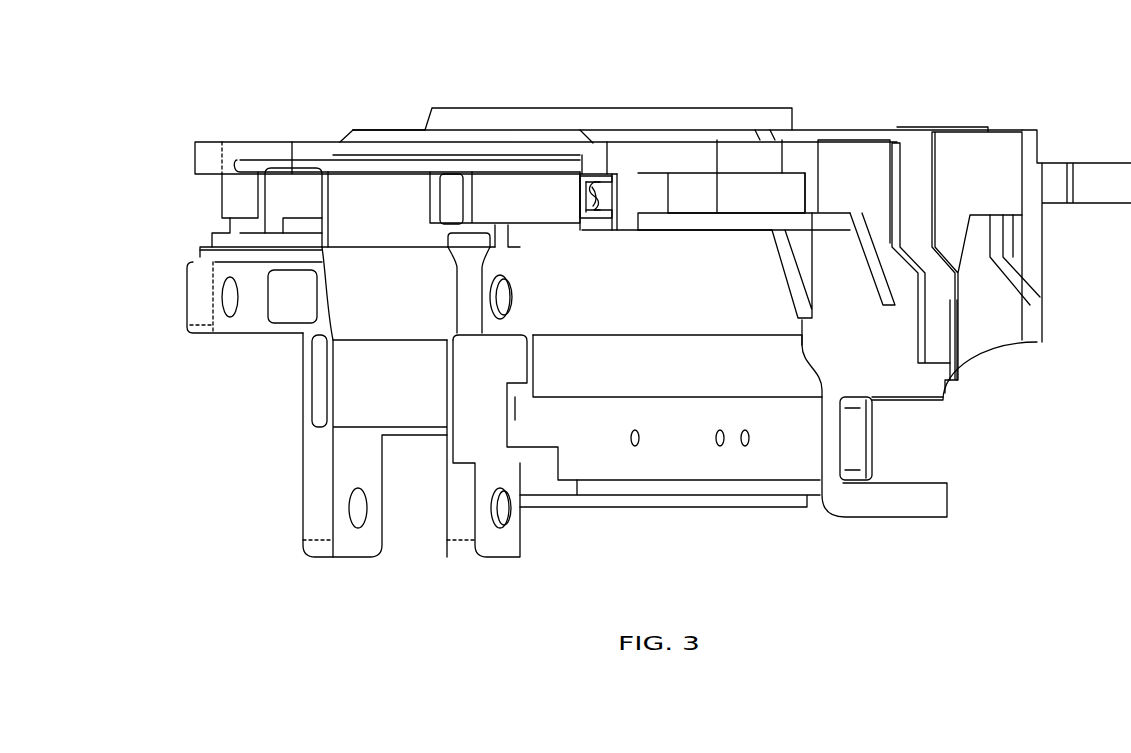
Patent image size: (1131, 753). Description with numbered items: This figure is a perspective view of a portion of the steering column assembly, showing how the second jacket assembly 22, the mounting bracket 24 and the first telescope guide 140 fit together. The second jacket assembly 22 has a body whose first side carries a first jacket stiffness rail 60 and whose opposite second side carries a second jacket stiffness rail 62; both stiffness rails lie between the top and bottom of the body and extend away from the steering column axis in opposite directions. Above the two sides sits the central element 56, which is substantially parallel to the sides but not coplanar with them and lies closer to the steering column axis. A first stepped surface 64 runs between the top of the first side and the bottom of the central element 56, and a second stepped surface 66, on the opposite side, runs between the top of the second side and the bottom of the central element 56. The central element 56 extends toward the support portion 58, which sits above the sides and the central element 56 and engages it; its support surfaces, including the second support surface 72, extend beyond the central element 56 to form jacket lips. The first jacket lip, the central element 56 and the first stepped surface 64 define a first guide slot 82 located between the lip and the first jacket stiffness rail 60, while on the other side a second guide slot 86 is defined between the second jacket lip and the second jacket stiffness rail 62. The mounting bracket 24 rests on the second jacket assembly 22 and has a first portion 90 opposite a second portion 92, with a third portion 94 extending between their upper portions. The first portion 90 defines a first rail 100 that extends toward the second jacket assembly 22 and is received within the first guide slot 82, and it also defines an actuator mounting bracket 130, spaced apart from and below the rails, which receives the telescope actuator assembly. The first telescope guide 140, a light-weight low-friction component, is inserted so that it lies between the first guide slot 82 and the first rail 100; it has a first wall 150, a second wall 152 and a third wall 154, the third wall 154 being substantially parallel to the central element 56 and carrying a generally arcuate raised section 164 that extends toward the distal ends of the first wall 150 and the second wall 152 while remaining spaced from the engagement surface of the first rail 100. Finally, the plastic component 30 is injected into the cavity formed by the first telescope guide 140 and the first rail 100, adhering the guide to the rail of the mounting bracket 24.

The second jacket assembly 22 is at (230, 350).
The mounting bracket 24 is at (773, 97).
The plastic component 30 is at (606, 207).
The central element 56 is at (265, 206).
The support portion 58 is at (390, 168).
The first jacket stiffness rail 60 is at (626, 322).
The second jacket stiffness rail 62 is at (187, 292).
The first stepped surface 64 is at (500, 226).
The second stepped surface 66 is at (212, 240).
The second support surface 72 is at (248, 172).
The first guide slot 82 is at (483, 205).
The second guide slot 86 is at (240, 208).
The first portion 90 is at (655, 203).
The second portion 92 is at (210, 200).
The third portion 94 is at (540, 103).
The first rail 100 is at (625, 180).
The actuator mounting bracket 130 is at (940, 412).
The first telescope guide 140 is at (568, 228).
The first wall 150 is at (600, 153).
The second wall 152 is at (600, 220).
The third wall 154 is at (578, 179).
The raised section 164 is at (580, 200).